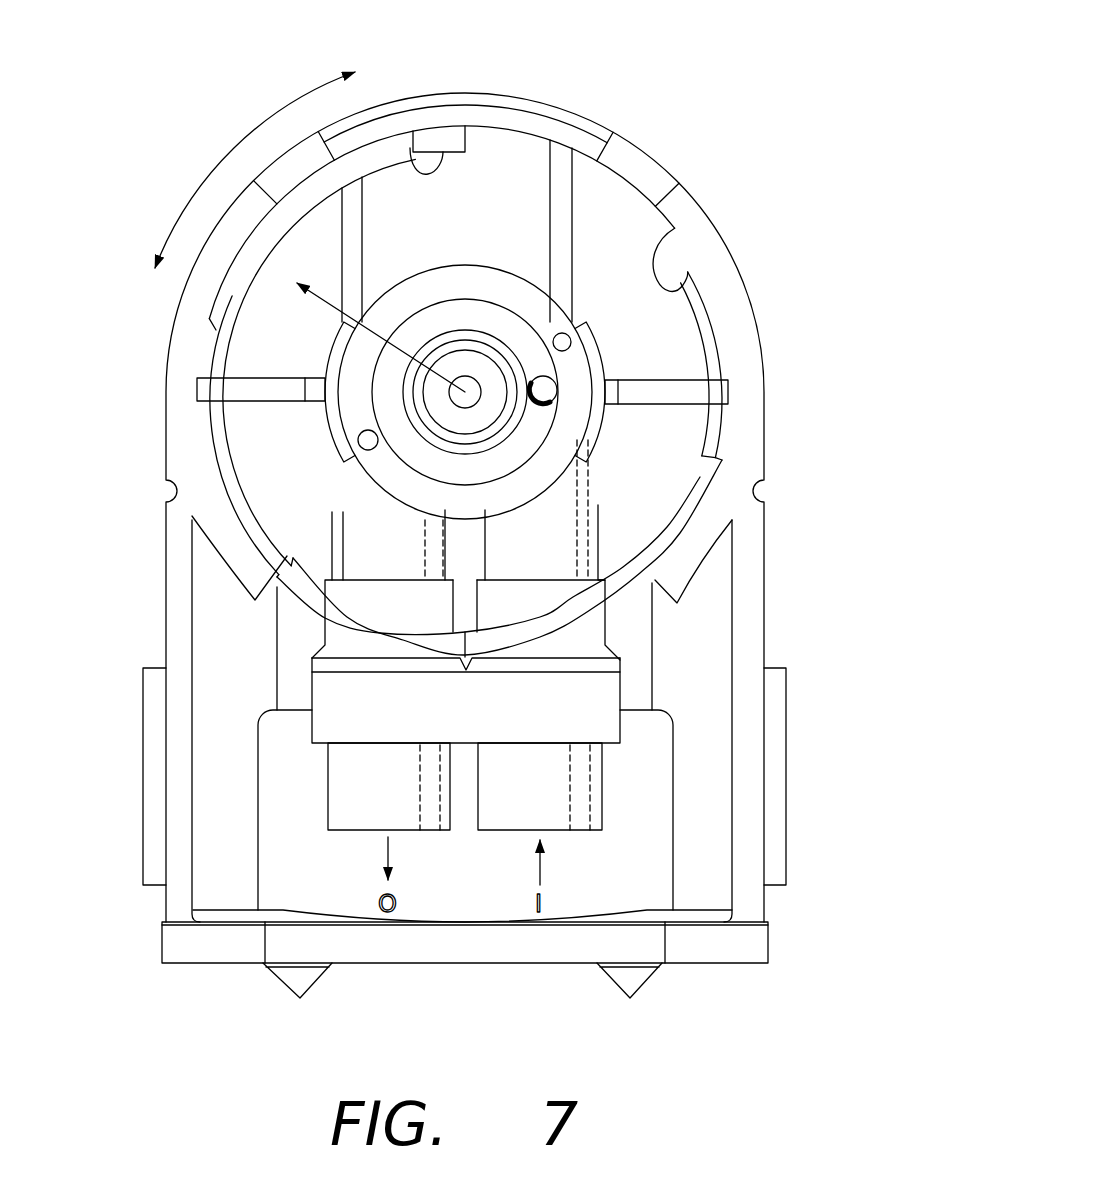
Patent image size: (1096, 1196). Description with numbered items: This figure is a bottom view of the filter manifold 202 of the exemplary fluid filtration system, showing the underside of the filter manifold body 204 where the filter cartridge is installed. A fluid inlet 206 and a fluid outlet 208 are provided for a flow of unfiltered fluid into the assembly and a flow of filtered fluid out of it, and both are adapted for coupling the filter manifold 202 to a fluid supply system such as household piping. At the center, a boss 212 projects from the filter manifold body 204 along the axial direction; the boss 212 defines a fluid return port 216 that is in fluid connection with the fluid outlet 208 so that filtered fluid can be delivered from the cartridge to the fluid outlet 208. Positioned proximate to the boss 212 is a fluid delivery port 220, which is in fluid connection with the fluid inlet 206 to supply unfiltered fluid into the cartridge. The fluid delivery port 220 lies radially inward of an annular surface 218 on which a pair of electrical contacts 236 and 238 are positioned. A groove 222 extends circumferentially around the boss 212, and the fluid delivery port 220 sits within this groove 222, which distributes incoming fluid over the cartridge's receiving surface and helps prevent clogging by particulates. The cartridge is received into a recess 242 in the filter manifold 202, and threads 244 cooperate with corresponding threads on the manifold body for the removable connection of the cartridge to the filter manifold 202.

The filter manifold 202 is at (633, 90).
The filter manifold body 204 is at (737, 328).
The fluid inlet 206 is at (583, 807).
The fluid outlet 208 is at (340, 803).
The boss 212 is at (458, 343).
The fluid return port 216 is at (470, 385).
The annular surface 218 is at (410, 293).
The fluid delivery port 220 is at (556, 403).
The groove 222 is at (400, 432).
The electrical contact 236 is at (358, 445).
The electrical contact 238 is at (562, 333).
The recess 242 is at (265, 333).
The threads 244 is at (410, 148).